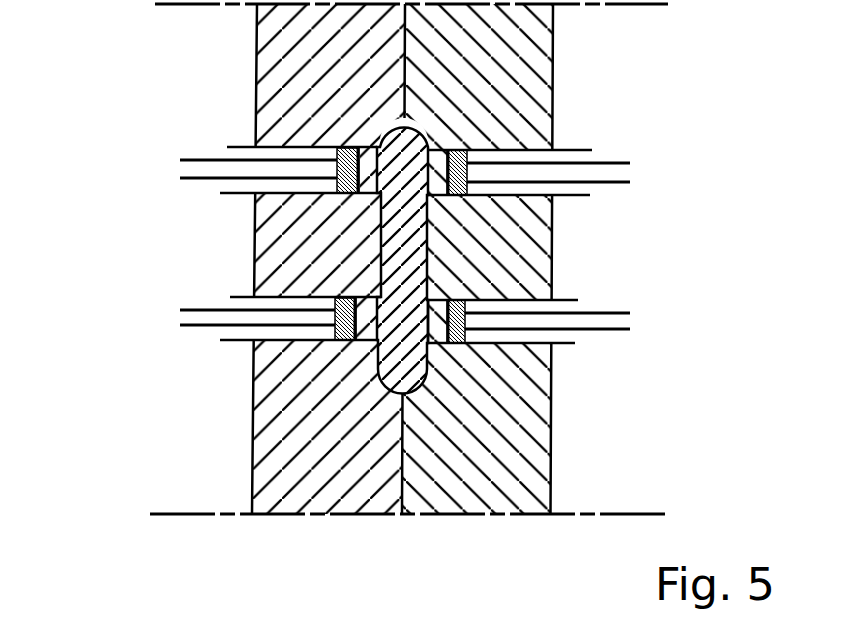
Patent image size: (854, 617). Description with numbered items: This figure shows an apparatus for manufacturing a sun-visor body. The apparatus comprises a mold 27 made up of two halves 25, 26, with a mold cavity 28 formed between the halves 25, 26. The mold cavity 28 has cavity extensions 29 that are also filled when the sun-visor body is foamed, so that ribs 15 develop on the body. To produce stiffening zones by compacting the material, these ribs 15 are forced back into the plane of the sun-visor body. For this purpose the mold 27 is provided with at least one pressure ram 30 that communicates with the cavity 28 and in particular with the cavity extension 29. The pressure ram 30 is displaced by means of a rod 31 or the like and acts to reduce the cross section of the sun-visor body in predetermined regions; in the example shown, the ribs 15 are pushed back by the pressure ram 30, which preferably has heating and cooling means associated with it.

The ribs 15 is at (438, 343).
The mold half 25 is at (328, 92).
The mold half 26 is at (517, 93).
The mold 27 is at (150, 407).
The mold cavity 28 is at (432, 128).
The cavity extensions 29 is at (362, 340).
The pressure ram 30 is at (440, 322).
The rod 31 is at (615, 323).